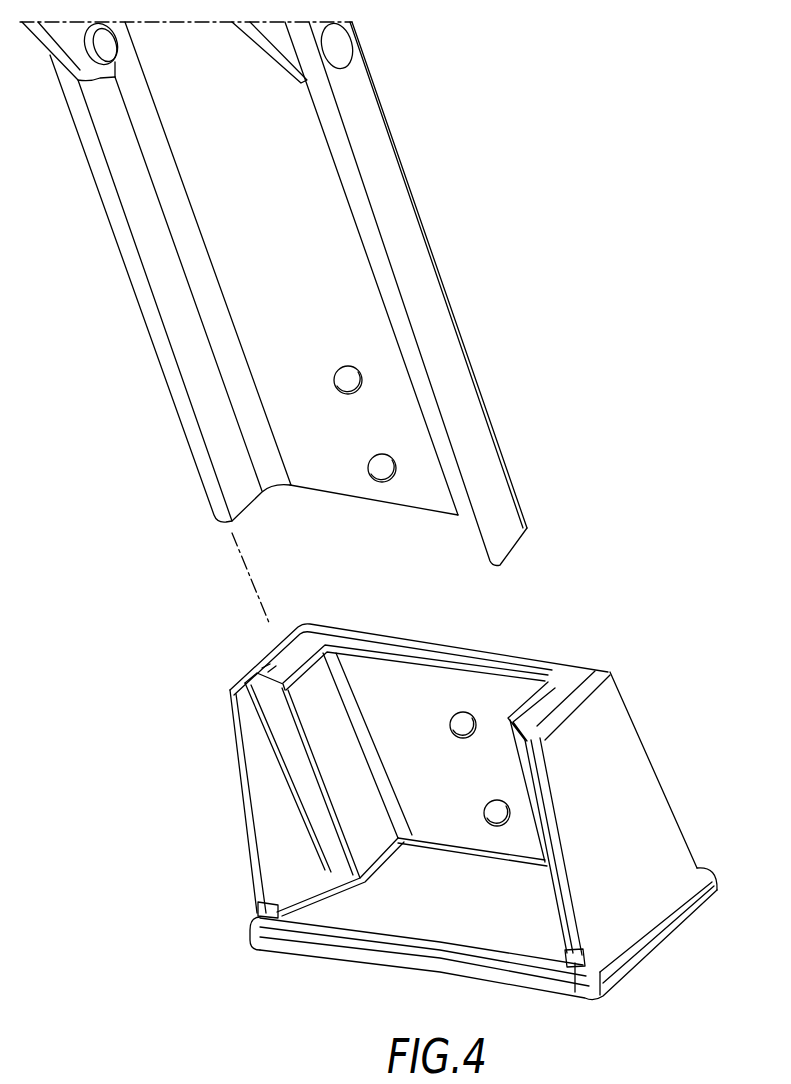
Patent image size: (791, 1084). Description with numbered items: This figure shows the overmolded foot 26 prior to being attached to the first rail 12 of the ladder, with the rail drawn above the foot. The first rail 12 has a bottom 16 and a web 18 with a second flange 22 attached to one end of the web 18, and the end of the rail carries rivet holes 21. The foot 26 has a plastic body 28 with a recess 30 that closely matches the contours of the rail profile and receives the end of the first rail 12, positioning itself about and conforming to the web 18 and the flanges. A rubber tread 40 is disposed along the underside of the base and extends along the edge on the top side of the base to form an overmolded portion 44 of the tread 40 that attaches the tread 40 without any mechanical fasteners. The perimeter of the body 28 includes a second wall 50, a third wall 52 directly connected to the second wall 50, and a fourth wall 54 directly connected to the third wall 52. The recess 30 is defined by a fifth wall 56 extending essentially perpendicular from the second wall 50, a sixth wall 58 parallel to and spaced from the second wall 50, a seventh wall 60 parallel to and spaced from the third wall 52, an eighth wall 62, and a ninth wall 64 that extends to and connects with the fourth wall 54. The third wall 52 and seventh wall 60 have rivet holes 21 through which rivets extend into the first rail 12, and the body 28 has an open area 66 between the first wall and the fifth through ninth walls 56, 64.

The first rail 12 is at (273, 322).
The bottom 16 is at (483, 442).
The web 18 is at (258, 206).
The rivet holes 21 is at (378, 462).
The second flange 22 is at (128, 182).
The foot 26 is at (428, 776).
The plastic body 28 is at (250, 790).
The recess 30 is at (610, 645).
The rubber tread 40 is at (643, 955).
The overmolded portion 44 is at (410, 939).
The second wall 50 is at (623, 824).
The third wall 52 is at (419, 637).
The fourth wall 54 is at (268, 650).
The fifth wall 56 is at (548, 720).
The sixth wall 58 is at (537, 687).
The seventh wall 60 is at (372, 638).
The eighth wall 62 is at (272, 668).
The ninth wall 64 is at (262, 660).
The open area 66 is at (453, 884).